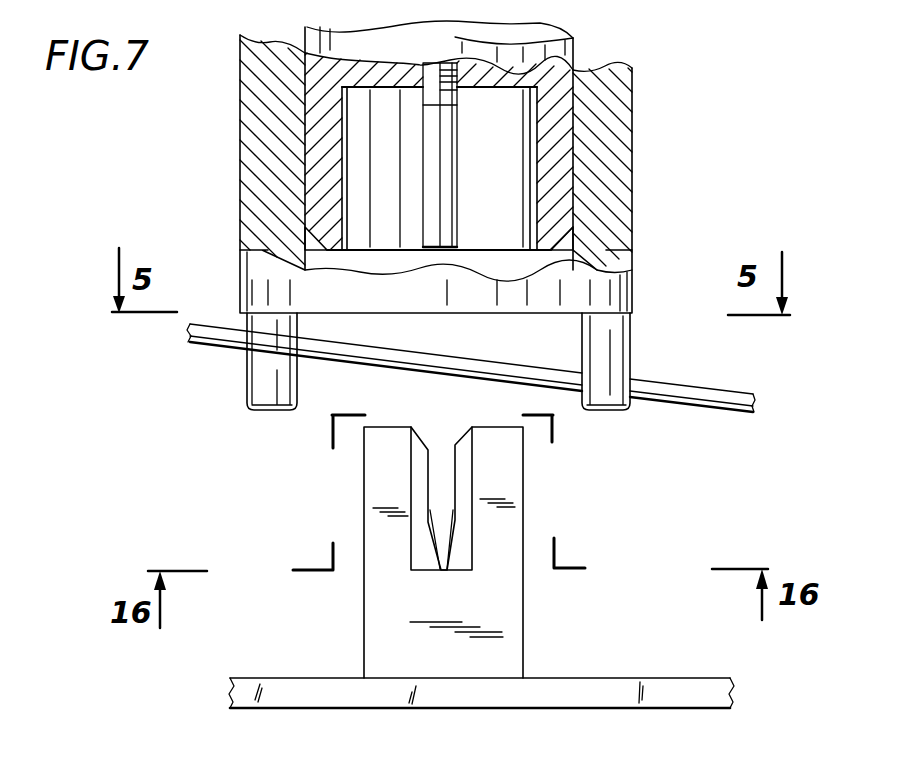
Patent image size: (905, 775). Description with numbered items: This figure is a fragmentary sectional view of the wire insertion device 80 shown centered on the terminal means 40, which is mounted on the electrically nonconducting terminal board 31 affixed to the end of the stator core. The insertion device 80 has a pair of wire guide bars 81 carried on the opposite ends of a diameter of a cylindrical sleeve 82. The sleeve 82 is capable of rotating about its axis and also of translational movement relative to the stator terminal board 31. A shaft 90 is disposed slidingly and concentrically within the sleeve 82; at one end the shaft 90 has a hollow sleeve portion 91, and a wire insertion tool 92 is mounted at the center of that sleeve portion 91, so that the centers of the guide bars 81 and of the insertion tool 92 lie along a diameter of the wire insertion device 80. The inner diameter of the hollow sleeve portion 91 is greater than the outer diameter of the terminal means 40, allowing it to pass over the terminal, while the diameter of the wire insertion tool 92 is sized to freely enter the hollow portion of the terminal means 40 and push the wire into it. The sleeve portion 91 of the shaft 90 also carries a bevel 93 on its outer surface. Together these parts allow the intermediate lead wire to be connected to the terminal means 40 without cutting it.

The terminal board 31 is at (653, 678).
The terminal means 40 is at (524, 637).
The wire insertion device 80 is at (633, 148).
The wire guide bars 81 is at (252, 410).
The cylindrical sleeve 82 is at (240, 265).
The shaft 90 is at (330, 80).
The hollow sleeve portion 91 is at (537, 147).
The wire insertion tool 92 is at (453, 192).
The bevel 93 is at (575, 250).